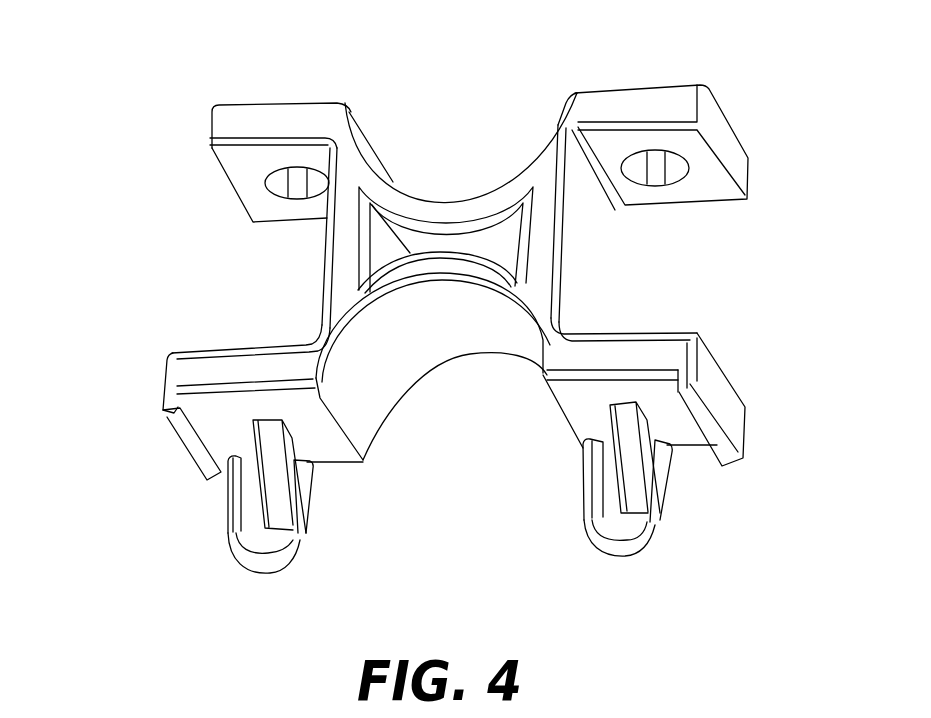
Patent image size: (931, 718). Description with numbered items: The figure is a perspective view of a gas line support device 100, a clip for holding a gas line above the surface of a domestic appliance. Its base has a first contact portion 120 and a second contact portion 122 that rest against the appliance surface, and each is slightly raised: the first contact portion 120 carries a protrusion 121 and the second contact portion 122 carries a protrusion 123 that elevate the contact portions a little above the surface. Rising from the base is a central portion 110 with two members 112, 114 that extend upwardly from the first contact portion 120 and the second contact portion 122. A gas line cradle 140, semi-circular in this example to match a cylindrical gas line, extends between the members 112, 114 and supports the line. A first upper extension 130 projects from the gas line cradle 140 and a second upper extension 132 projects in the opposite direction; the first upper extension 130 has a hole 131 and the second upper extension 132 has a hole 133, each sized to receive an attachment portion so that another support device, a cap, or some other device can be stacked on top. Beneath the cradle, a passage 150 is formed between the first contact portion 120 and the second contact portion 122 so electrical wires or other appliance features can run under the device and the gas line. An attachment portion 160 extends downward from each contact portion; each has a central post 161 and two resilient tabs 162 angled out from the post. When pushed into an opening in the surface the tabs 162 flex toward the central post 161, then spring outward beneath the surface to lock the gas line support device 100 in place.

The gas line support device 100 is at (748, 272).
The central portion 110 is at (333, 276).
The member 112 is at (343, 233).
The member 114 is at (540, 262).
The first contact portion 120 is at (193, 372).
The protrusion 121 is at (173, 425).
The second contact portion 122 is at (645, 348).
The protrusion 123 is at (700, 417).
The first upper extension 130 is at (277, 131).
The hole 131 is at (267, 173).
The second upper extension 132 is at (669, 110).
The hole 133 is at (677, 170).
The gas line cradle 140 is at (473, 205).
The passage 150 is at (462, 327).
The attachment portion 160 is at (253, 541).
The central post 161 is at (233, 517).
The resilient tab 162 is at (227, 497).